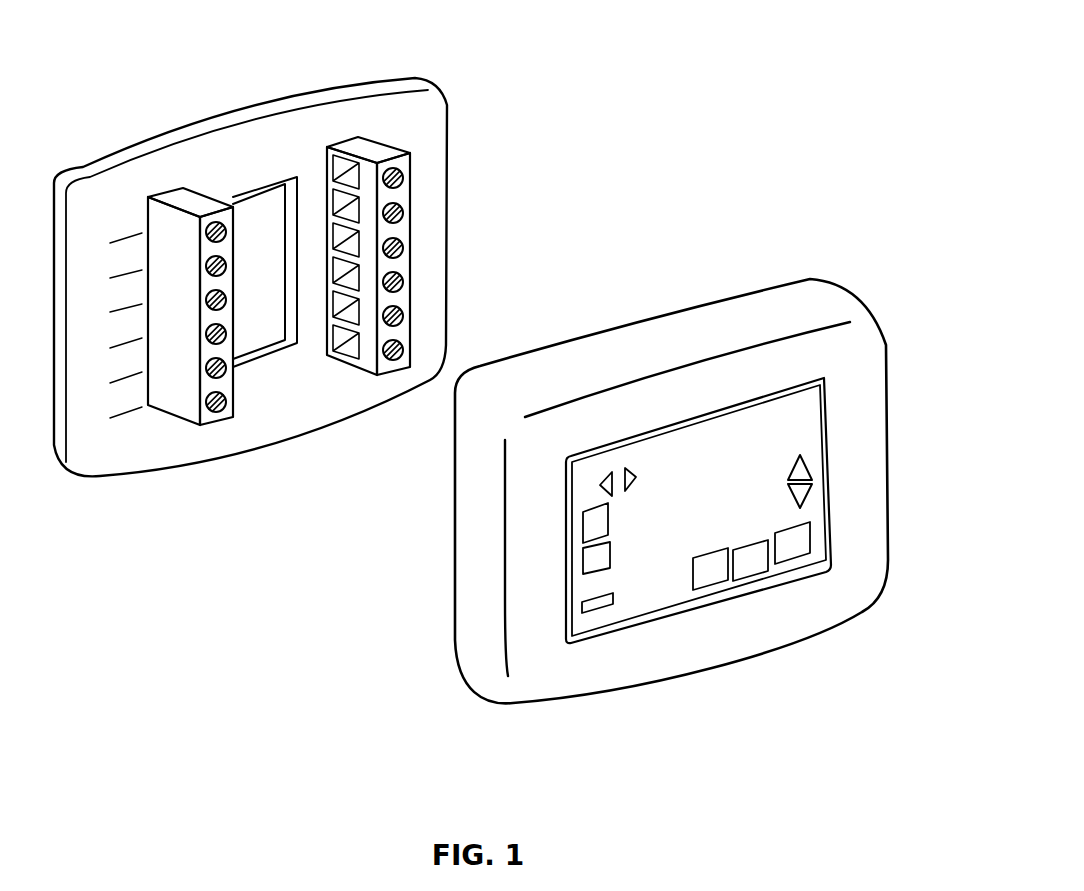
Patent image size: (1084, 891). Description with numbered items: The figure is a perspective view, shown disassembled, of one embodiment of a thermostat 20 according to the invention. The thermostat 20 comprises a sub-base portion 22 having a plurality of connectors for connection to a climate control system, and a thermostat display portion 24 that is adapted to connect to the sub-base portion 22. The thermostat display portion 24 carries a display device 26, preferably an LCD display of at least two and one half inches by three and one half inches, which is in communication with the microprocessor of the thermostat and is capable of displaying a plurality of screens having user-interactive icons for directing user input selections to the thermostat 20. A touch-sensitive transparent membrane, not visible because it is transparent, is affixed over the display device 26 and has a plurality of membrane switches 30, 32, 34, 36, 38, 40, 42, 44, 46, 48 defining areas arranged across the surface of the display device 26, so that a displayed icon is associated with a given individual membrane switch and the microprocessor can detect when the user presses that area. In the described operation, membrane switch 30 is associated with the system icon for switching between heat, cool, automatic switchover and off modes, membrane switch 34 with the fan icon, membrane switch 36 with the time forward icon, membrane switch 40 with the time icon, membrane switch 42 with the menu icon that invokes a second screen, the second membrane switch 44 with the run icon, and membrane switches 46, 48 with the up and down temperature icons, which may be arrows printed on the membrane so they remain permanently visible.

The thermostat 20 is at (673, 98).
The sub-base portion 22 is at (440, 90).
The thermostat display portion 24 is at (853, 300).
The display device 26 is at (813, 440).
The membrane switch 30 is at (582, 522).
The membrane switch 32 is at (587, 611).
The membrane switch 34 is at (582, 566).
The membrane switch 36 is at (627, 470).
The membrane switch 38 is at (608, 473).
The membrane switch 40 is at (707, 586).
The membrane switch 42 is at (757, 578).
The second membrane switch 44 is at (808, 568).
The membrane switch 46 is at (810, 467).
The membrane switch 48 is at (810, 492).